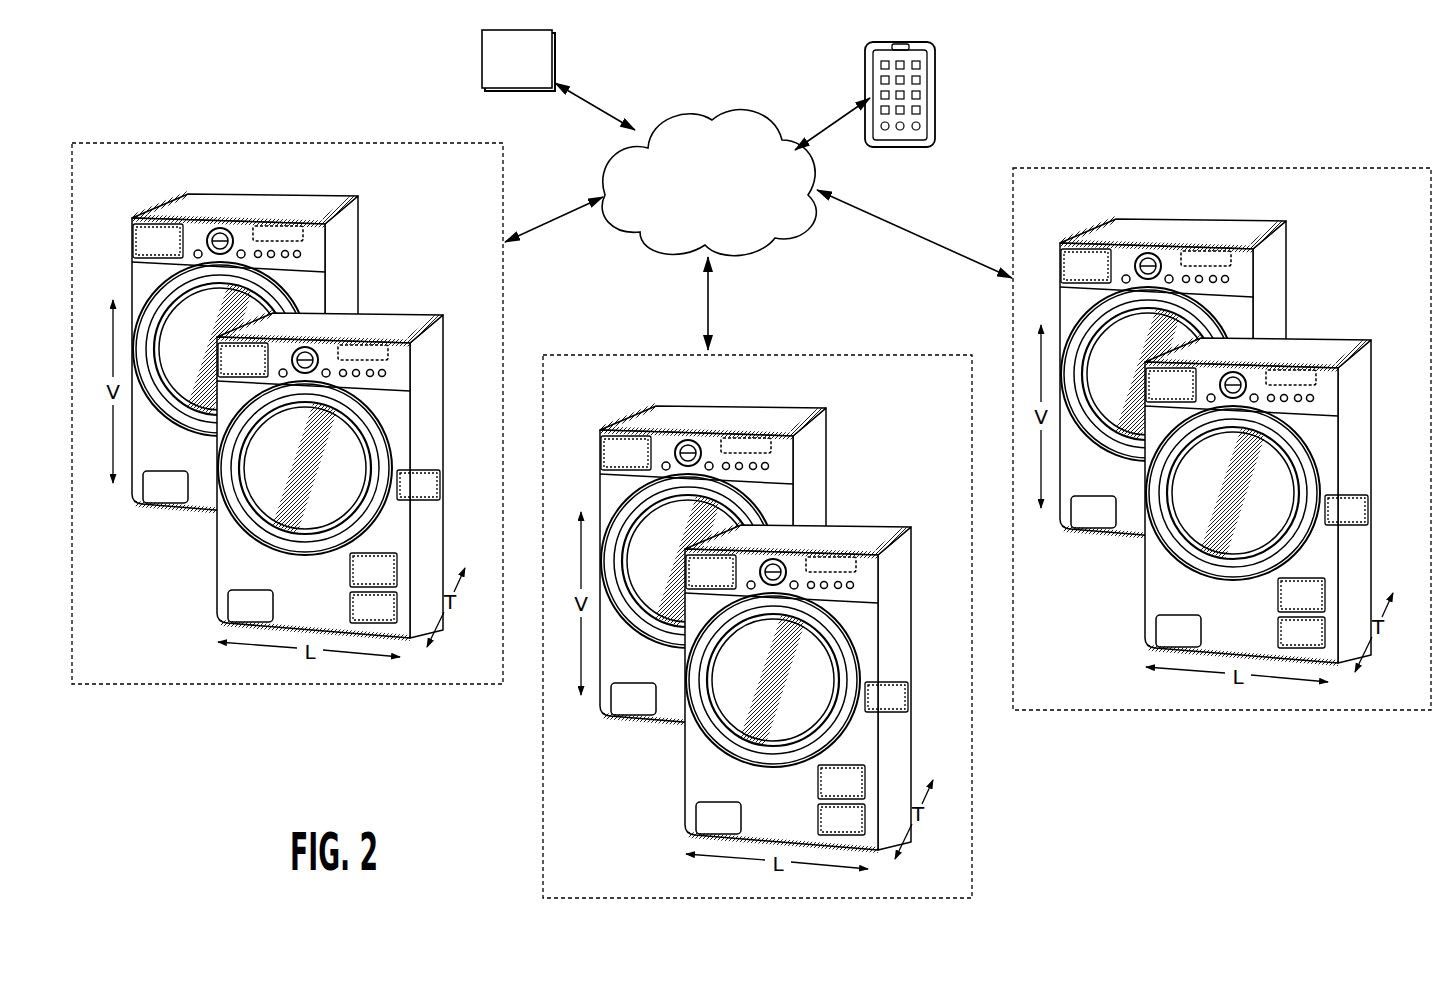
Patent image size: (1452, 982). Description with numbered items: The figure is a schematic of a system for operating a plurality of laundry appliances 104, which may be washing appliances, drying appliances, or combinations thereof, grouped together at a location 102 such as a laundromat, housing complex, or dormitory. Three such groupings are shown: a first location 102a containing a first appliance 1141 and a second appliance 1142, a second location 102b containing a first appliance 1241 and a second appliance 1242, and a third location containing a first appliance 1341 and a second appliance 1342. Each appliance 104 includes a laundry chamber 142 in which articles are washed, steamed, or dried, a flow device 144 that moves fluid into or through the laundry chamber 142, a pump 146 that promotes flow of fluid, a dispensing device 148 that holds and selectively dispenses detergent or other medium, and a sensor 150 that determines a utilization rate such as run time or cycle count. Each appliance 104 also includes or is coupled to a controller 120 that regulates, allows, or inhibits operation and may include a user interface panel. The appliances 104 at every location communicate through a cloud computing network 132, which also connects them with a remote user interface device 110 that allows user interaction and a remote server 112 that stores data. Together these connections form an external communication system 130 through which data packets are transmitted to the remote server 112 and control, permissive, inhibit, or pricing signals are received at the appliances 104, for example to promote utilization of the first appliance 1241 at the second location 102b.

The location 102 is at (274, 87).
The first location 102a is at (202, 143).
The second location 102b is at (790, 357).
The laundry appliance 104 is at (402, 244).
The remote user interface device 110 is at (940, 104).
The remote server 112 is at (499, 70).
The controller 120 is at (265, 212).
The external communication system 130 is at (1386, 168).
The network 132 is at (692, 191).
The laundry chamber 142 is at (189, 320).
The flow device 144 is at (882, 591).
The pump 146 is at (837, 713).
The dispensing device 148 is at (664, 406).
The sensor 150 is at (837, 676).
The first appliance at first location 1141 is at (352, 242).
The second appliance at first location 1142 is at (427, 359).
The first appliance at second location 1241 is at (820, 454).
The second appliance at second location 1242 is at (895, 571).
The first appliance at third location 1341 is at (1280, 267).
The second appliance at third location 1342 is at (1356, 420).